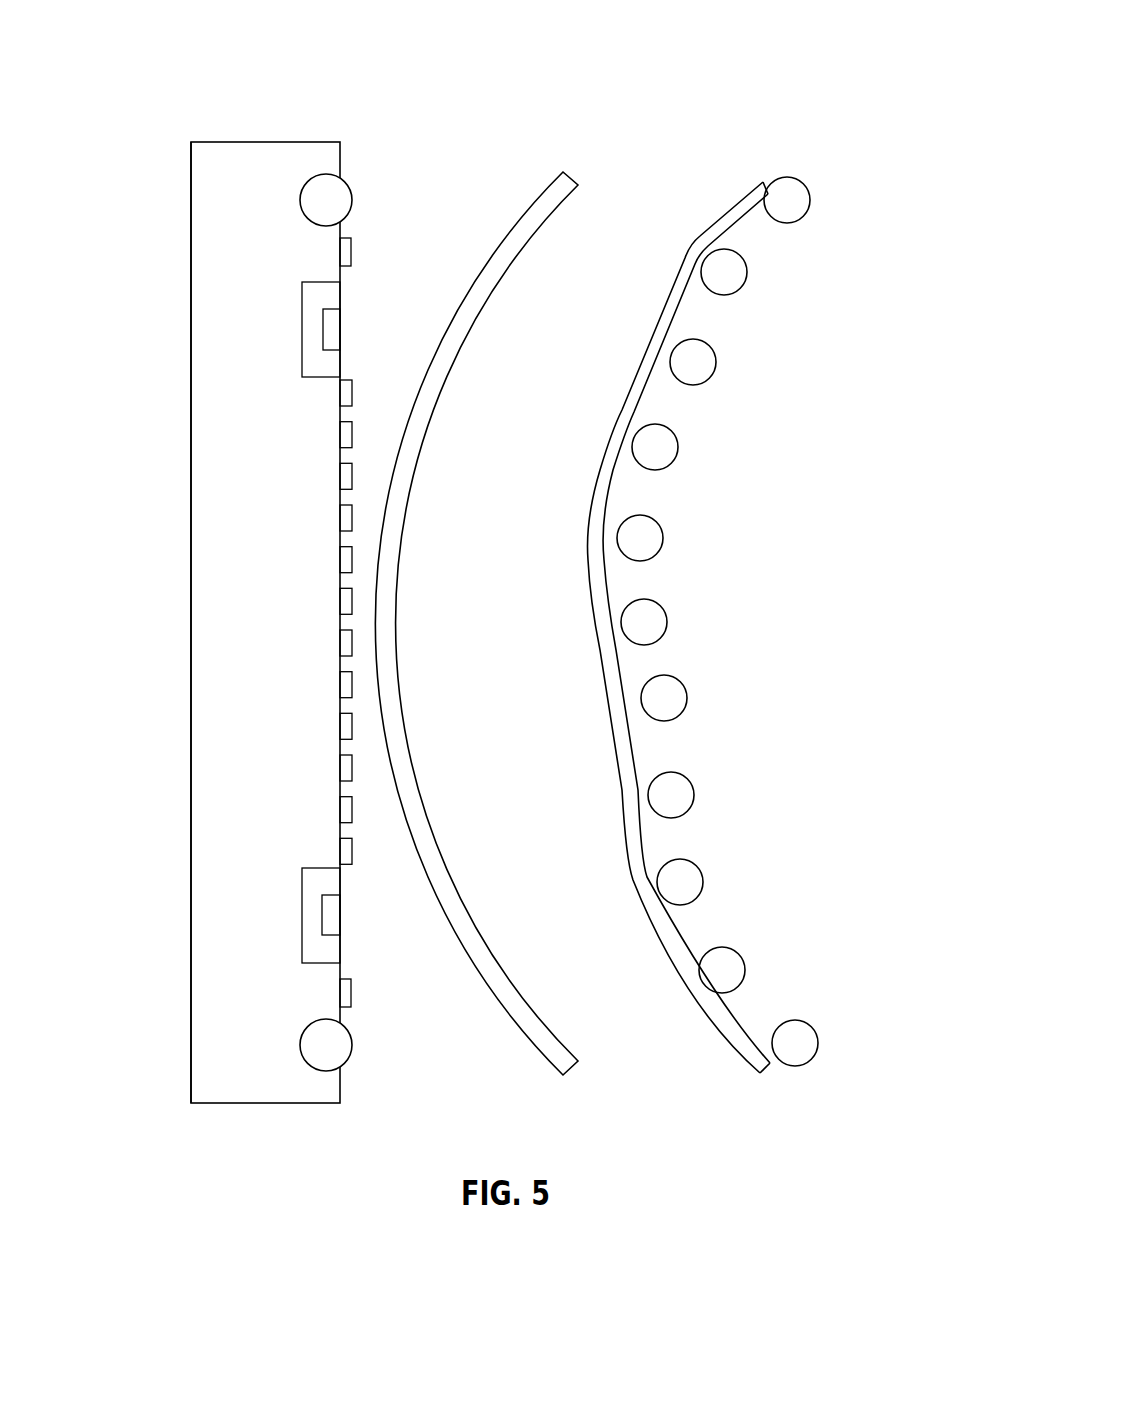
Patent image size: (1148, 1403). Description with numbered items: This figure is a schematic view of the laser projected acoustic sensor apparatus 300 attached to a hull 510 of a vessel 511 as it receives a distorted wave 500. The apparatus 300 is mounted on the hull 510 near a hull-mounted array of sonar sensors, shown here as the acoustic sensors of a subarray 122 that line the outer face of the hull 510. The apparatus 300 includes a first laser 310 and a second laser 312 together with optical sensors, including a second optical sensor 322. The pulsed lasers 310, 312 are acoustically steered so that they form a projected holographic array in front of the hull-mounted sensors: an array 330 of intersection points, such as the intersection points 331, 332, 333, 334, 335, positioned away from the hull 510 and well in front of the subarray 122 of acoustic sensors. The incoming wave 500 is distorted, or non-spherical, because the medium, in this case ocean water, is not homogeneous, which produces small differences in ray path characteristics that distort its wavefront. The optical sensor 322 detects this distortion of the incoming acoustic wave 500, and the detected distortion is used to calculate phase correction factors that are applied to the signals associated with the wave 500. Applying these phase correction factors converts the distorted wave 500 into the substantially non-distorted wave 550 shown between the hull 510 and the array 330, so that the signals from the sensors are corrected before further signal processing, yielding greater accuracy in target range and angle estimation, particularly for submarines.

The laser projected acoustic sensor apparatus 300 is at (203, 43).
The hull 510 is at (265, 141).
The vessel 511 is at (190, 258).
The first laser 310 is at (353, 200).
The second laser 312 is at (333, 333).
The second optical sensor 322 is at (332, 948).
The subarray 122 is at (350, 810).
The substantially non-distorted wave 550 is at (425, 422).
The distorted wave 500 is at (642, 918).
The array of intersection points 330 is at (817, 416).
The intersection point 331 is at (678, 445).
The intersection point 332 is at (663, 540).
The intersection point 333 is at (667, 622).
The intersection point 334 is at (687, 700).
The intersection point 335 is at (693, 795).